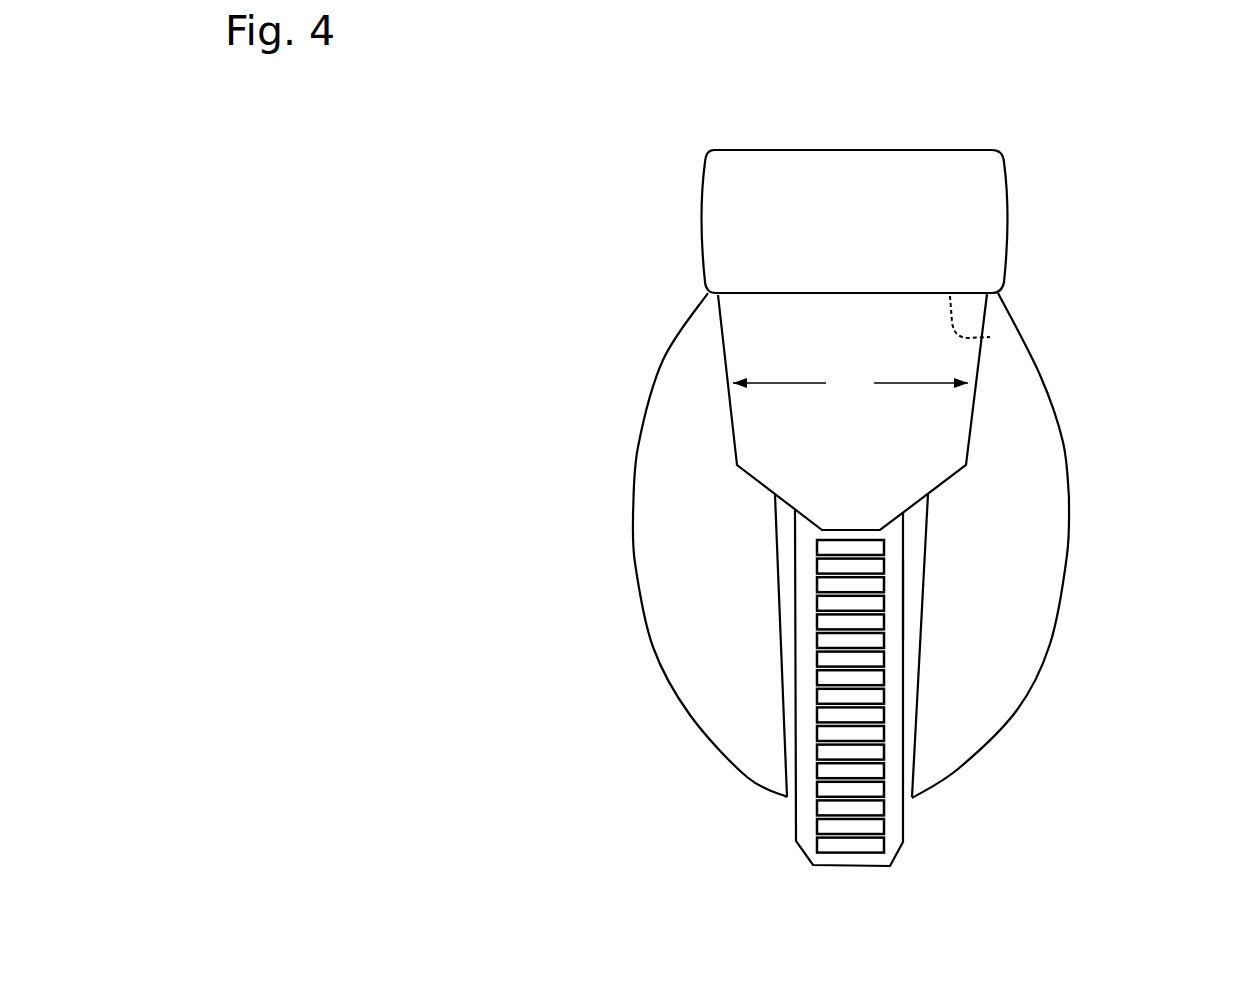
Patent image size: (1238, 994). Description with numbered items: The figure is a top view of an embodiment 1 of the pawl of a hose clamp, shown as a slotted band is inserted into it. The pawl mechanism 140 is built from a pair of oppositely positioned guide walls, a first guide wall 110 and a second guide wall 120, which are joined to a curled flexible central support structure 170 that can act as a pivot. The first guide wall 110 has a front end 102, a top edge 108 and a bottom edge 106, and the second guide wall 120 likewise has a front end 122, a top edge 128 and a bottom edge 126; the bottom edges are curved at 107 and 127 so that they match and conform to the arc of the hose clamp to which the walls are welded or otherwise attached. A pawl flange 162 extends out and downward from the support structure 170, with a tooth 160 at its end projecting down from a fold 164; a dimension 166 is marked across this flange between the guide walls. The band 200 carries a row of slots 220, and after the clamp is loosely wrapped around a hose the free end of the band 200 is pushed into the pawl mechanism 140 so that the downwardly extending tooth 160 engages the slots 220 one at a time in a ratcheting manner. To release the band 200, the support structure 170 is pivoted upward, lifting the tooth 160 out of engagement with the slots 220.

The electric hair removal device 1 is at (878, 515).
The front end 102 is at (933, 790).
The bottom edge 106 is at (925, 563).
The curved portion 107 is at (914, 597).
The top edge 108 is at (1065, 508).
The first guide wall 110 is at (1030, 568).
The second guide wall 120 is at (685, 578).
The front end 122 is at (745, 778).
The bottom edge 126 is at (777, 552).
The curved portion 127 is at (777, 527).
The top edge 128 is at (633, 562).
The pawl mechanism 140 is at (914, 190).
The tooth 160 is at (834, 526).
The pawl flange 162 is at (975, 375).
The fold 164 is at (983, 340).
The neck width 166 is at (850, 382).
The curled flexible central support structure 170 is at (957, 242).
The band 200 is at (829, 715).
The slots 220 is at (868, 718).